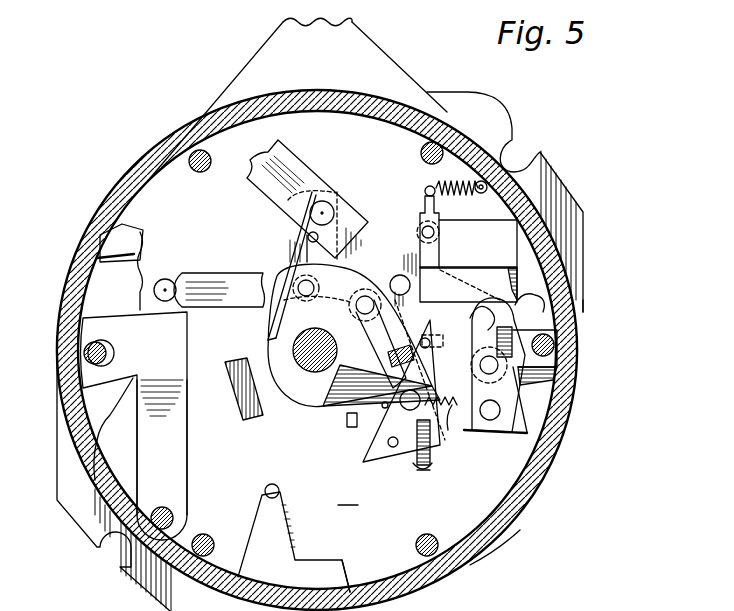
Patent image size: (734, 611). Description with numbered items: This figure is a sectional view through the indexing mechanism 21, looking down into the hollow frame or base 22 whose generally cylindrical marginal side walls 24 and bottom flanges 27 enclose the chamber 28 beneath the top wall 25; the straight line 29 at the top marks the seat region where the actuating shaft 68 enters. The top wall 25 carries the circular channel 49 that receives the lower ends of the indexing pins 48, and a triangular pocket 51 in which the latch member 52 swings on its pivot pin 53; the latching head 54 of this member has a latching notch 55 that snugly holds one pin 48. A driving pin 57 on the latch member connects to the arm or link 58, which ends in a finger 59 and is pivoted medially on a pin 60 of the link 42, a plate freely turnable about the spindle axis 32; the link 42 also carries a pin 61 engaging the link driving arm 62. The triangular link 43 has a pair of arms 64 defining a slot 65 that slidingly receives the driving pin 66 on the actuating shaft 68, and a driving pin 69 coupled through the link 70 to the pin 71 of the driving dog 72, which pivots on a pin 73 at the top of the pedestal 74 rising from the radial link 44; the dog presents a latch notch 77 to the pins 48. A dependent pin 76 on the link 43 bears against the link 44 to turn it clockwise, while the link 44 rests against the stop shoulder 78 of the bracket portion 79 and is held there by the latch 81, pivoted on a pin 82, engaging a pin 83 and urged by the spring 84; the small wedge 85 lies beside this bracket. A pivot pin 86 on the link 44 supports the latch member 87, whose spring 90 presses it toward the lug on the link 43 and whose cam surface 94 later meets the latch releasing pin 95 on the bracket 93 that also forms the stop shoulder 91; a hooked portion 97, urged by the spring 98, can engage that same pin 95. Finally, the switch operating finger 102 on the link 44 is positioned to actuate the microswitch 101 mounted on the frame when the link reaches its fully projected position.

The indexing mechanism 21 is at (123, 167).
The frame or base 22 is at (547, 494).
The marginal side walls 24 is at (500, 531).
The top wall 25 is at (143, 250).
The bottom flanges 27 is at (546, 187).
The chamber or cavity 28 is at (348, 498).
The cover edge 29 is at (375, 55).
The cam shaft 32 is at (310, 338).
The link 42 is at (283, 335).
The triangular link 43 is at (295, 350).
The link 44 is at (345, 410).
The indexing pin 48 is at (204, 172).
The circular channel 49 is at (118, 238).
The pocket 51 is at (105, 382).
The latch member 52 is at (162, 447).
The pivot pin 53 is at (162, 506).
The latching head 54 is at (134, 426).
The latching notch 55 is at (110, 345).
The driving pin 57 is at (168, 279).
The arm or link 58 is at (216, 272).
The finger 59 is at (532, 293).
The pin 60 is at (299, 281).
The pin 61 is at (356, 307).
The link driving arm 62 is at (448, 432).
The arms 64 is at (292, 205).
The slot 65 is at (306, 238).
The driving pin 66 is at (318, 167).
The actuating shaft 68 is at (278, 152).
The driving pin 69 is at (462, 290).
The link 70 is at (472, 345).
The pin 71 is at (527, 356).
The driving dog 72 is at (509, 396).
The pin 73 is at (490, 421).
The pedestal 74 is at (500, 433).
The dependent pin 76 is at (398, 275).
The latch notch 77 is at (483, 318).
The stop shoulder 78 is at (572, 312).
The bracket portion 79 is at (478, 244).
The latch 81 is at (421, 242).
The pin 82 is at (436, 229).
The pin 83 is at (428, 365).
The spring 84 is at (455, 192).
The wedge 85 is at (506, 268).
The pivot pin 86 is at (372, 400).
The latch member 87 is at (368, 455).
The spring 90 is at (440, 410).
The stop shoulder 91 is at (346, 572).
The bracket 93 is at (290, 536).
The latch releasing cam surface 94 is at (530, 418).
The latch releasing pin 95 is at (265, 491).
The hooked portion 97 is at (424, 476).
The spring 98 is at (415, 447).
The microswitch 101 is at (240, 394).
The switch operating finger 102 is at (352, 428).